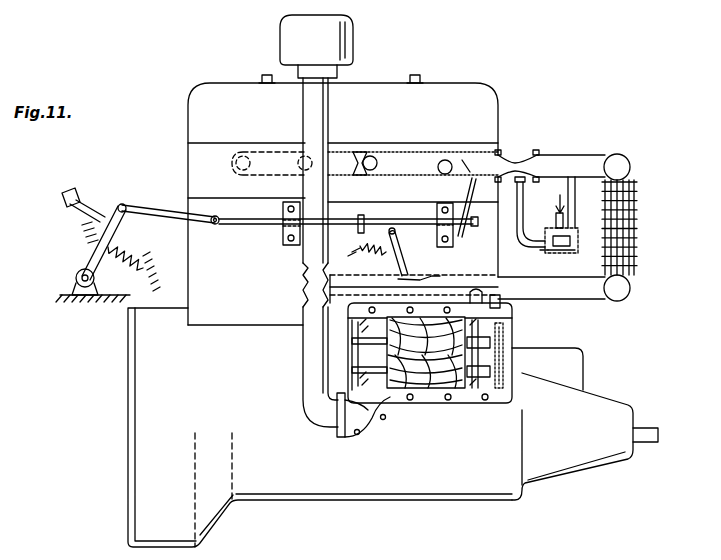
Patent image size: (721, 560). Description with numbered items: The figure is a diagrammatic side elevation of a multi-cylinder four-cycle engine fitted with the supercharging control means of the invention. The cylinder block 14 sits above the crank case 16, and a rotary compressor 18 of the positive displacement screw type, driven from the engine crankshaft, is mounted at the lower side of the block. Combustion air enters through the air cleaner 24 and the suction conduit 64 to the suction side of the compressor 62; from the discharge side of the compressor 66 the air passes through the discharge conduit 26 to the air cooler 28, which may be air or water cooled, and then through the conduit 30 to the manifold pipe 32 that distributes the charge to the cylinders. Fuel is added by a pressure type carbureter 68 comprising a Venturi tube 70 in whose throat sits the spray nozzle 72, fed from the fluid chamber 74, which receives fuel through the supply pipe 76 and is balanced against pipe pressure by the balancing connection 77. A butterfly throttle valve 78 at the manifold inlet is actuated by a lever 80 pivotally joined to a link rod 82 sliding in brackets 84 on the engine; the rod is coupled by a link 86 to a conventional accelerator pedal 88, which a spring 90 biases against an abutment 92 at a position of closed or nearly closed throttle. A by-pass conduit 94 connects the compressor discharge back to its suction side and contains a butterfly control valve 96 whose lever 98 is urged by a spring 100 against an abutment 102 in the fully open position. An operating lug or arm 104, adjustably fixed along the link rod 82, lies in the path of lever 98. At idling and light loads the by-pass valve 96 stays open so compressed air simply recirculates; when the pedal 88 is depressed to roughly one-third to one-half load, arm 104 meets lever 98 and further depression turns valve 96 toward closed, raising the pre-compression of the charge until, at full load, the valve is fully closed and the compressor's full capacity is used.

The cylinder block 14 is at (193, 282).
The crank case 16 is at (318, 493).
The rotary compressor 18 is at (445, 405).
The air cleaner 24 is at (355, 48).
The discharge conduit 26 is at (565, 299).
The air cooler 28 is at (636, 243).
The conduit 30 is at (565, 155).
The manifold pipe 32 is at (402, 152).
The suction side of the compressor 62 is at (363, 430).
The suction conduit 64 is at (305, 362).
The discharge side of the compressor 66 is at (500, 305).
The pressure type carbureter 68 is at (545, 252).
The Venturi tube 70 is at (515, 157).
The spray nozzle 72 is at (525, 183).
The fluid chamber 74 is at (568, 253).
The supply pipe 76 is at (556, 220).
The balancing connection 77 is at (576, 198).
The throttle valve 78 is at (462, 157).
The lever 80 is at (468, 215).
The link rod 82 is at (262, 225).
The brackets 84 is at (288, 246).
The link 86 is at (160, 208).
The accelerator pedal 88 is at (95, 202).
The spring 90 is at (135, 250).
The abutment 92 is at (86, 246).
The by-pass conduit 94 is at (335, 300).
The control valve 96 is at (432, 276).
The lever 98 is at (400, 220).
The spring 100 is at (359, 247).
The abutment 102 is at (404, 270).
The operating lug or arm 104 is at (360, 215).